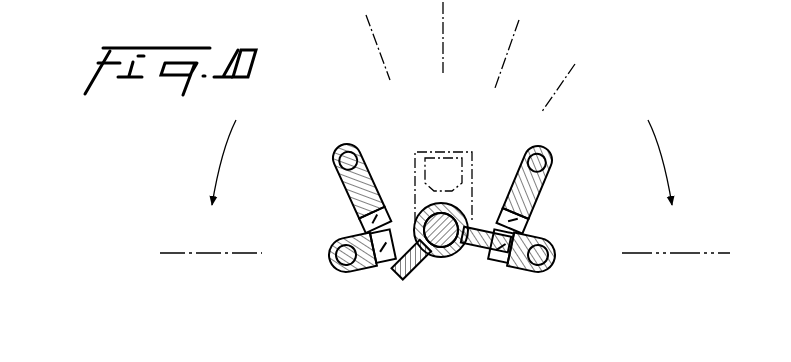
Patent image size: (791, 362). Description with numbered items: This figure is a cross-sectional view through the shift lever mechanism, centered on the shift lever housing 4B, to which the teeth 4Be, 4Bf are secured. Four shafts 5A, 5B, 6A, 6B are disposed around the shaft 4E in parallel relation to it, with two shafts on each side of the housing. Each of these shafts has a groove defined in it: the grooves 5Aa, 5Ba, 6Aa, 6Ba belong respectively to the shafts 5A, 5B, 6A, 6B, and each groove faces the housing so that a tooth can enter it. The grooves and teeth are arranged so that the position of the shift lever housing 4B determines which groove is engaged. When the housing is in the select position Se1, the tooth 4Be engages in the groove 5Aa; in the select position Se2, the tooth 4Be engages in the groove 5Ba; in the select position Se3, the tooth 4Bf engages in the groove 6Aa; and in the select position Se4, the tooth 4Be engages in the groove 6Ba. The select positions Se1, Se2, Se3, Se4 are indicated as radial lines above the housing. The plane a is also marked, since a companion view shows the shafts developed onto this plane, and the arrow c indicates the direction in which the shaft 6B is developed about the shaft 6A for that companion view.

The shaft 5A is at (343, 148).
The groove 5Aa is at (366, 222).
The shaft 5B is at (332, 258).
The groove 5Ba is at (366, 266).
The shift lever housing 4B is at (440, 262).
The tooth 4Be is at (394, 277).
The tooth 4Bf is at (490, 258).
The shaft 4E is at (452, 218).
The shaft 6A is at (556, 262).
The groove 6Aa is at (505, 264).
The shaft 6B is at (552, 148).
The groove 6Ba is at (520, 222).
The select position Se1 is at (578, 68).
The select position Se2 is at (517, 25).
The select position Se3 is at (444, 46).
The select position Se4 is at (369, 27).
The plane a is at (170, 253).
The arrow c is at (661, 155).